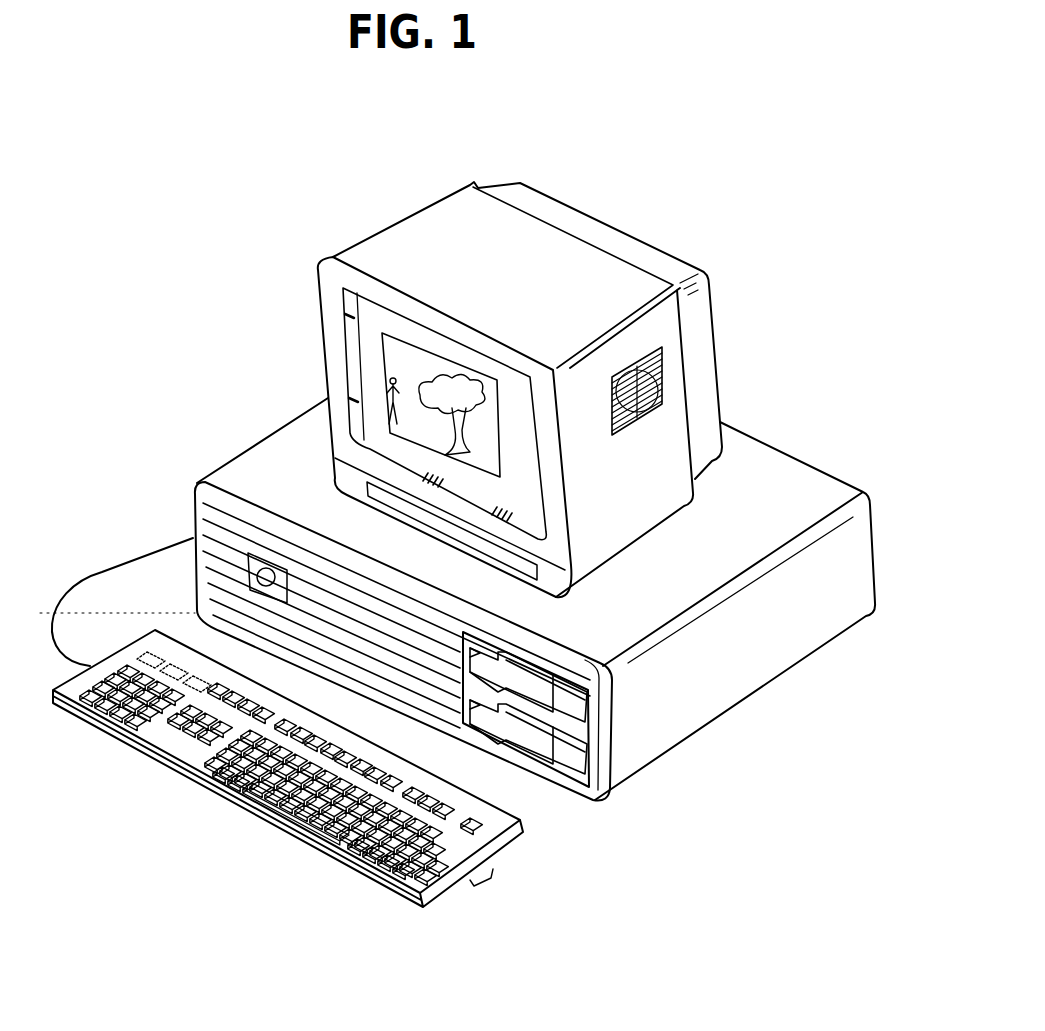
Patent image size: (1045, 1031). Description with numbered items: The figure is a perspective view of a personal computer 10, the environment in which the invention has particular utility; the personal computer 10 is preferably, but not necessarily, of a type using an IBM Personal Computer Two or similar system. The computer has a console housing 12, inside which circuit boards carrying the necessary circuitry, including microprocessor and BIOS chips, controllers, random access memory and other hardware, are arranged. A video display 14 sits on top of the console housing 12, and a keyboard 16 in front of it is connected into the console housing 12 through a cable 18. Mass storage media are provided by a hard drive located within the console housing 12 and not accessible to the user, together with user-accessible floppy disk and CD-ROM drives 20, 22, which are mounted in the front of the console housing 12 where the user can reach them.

The personal computer 10 is at (222, 273).
The console housing 12 is at (765, 650).
The video display 14 is at (702, 377).
The keyboard 16 is at (253, 815).
The cable 18 is at (140, 562).
The floppy disk drive 20 is at (580, 708).
The CD-ROM drive 22 is at (580, 757).